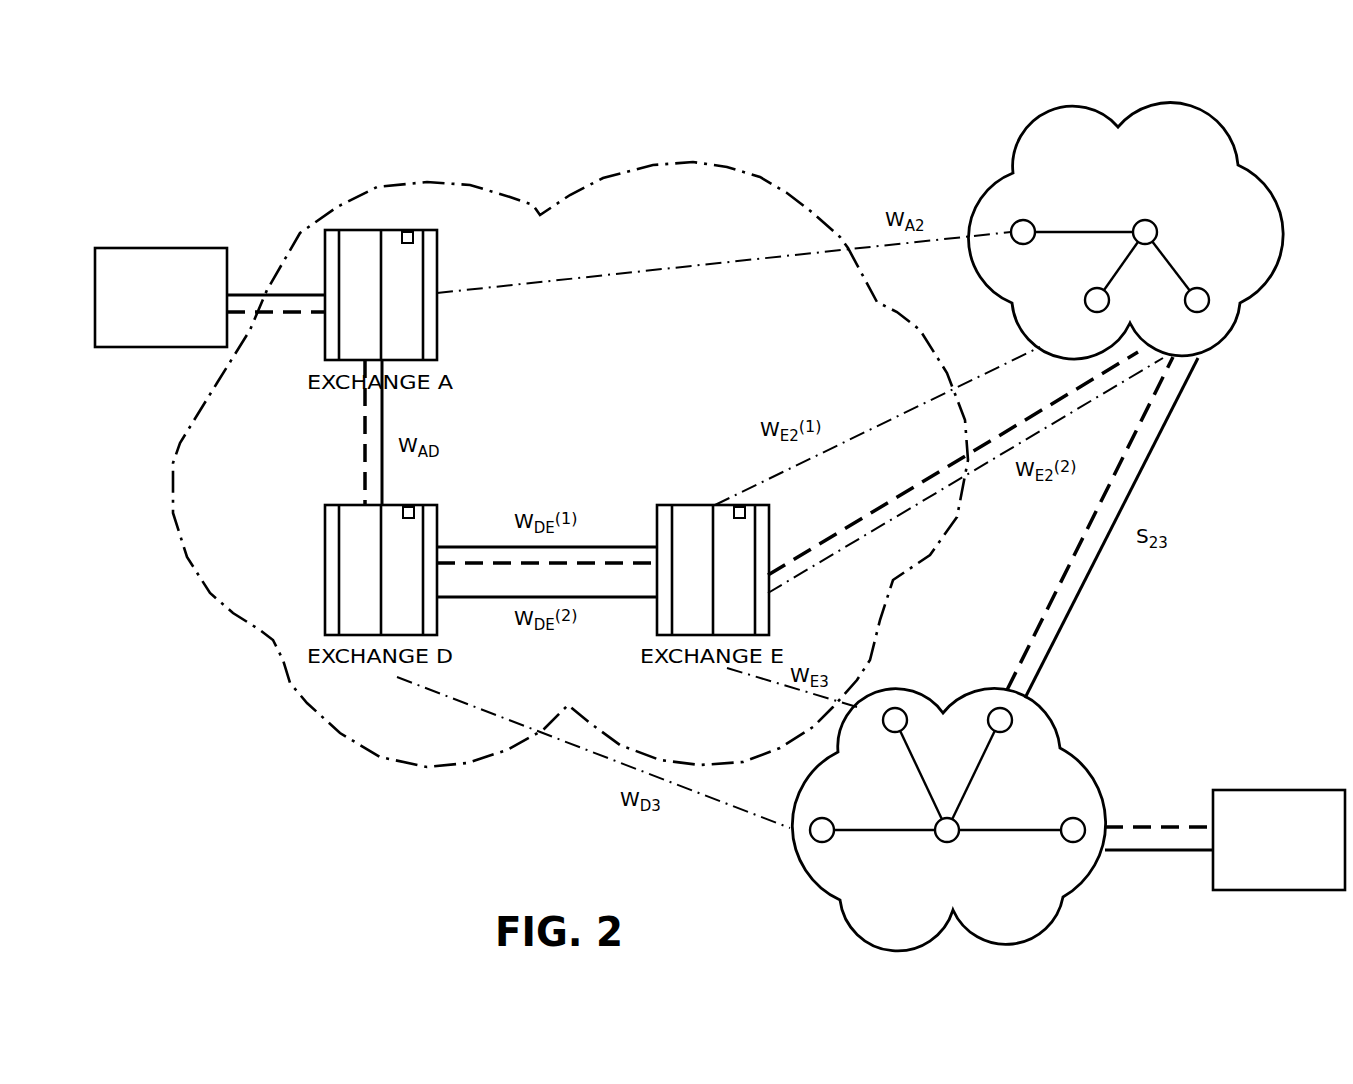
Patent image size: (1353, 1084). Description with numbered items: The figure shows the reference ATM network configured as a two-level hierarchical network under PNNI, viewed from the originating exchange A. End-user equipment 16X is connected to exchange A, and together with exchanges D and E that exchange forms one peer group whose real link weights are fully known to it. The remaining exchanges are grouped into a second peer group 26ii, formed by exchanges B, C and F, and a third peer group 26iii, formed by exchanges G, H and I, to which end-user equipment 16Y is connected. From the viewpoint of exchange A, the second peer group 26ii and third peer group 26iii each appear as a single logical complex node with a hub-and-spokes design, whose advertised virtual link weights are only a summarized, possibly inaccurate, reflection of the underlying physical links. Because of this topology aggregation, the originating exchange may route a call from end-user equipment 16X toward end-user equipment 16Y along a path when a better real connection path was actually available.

The end-user equipment 16X is at (189, 247).
The end-user equipment 16Y is at (1262, 790).
The second peer group 26ii is at (737, 170).
The third peer group 26iii is at (1088, 770).